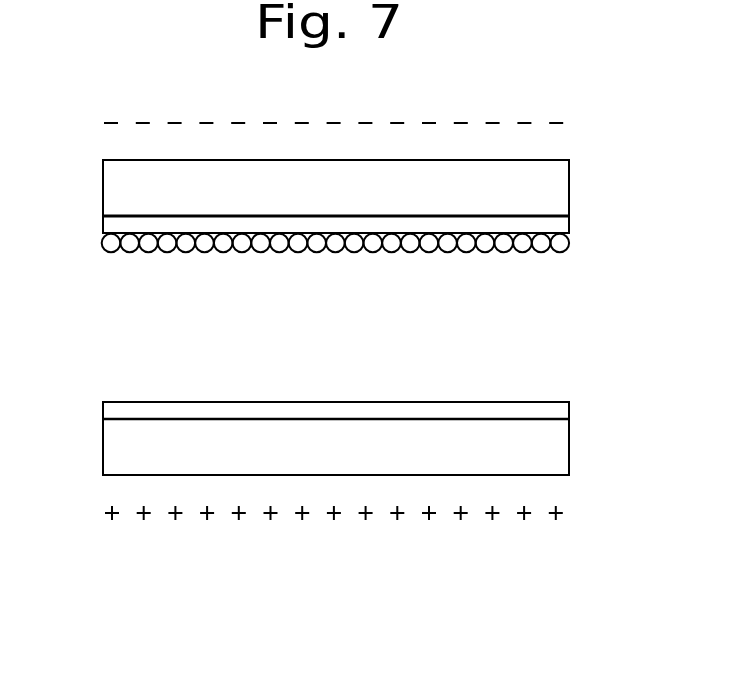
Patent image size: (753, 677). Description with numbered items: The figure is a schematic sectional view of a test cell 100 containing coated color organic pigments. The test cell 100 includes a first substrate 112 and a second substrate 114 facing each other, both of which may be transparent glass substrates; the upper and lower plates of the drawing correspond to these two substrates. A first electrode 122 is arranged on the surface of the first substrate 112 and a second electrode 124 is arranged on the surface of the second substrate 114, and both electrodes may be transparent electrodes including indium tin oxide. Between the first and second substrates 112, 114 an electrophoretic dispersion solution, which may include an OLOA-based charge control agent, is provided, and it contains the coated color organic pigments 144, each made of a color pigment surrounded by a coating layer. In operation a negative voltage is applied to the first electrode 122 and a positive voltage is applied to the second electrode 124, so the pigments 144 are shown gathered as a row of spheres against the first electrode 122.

The test cell 100 is at (110, 590).
The first substrate 112 is at (562, 188).
The second substrate 114 is at (562, 447).
The first electrode 122 is at (562, 224).
The second electrode 124 is at (562, 409).
The coated color organic pigments 144 is at (564, 243).